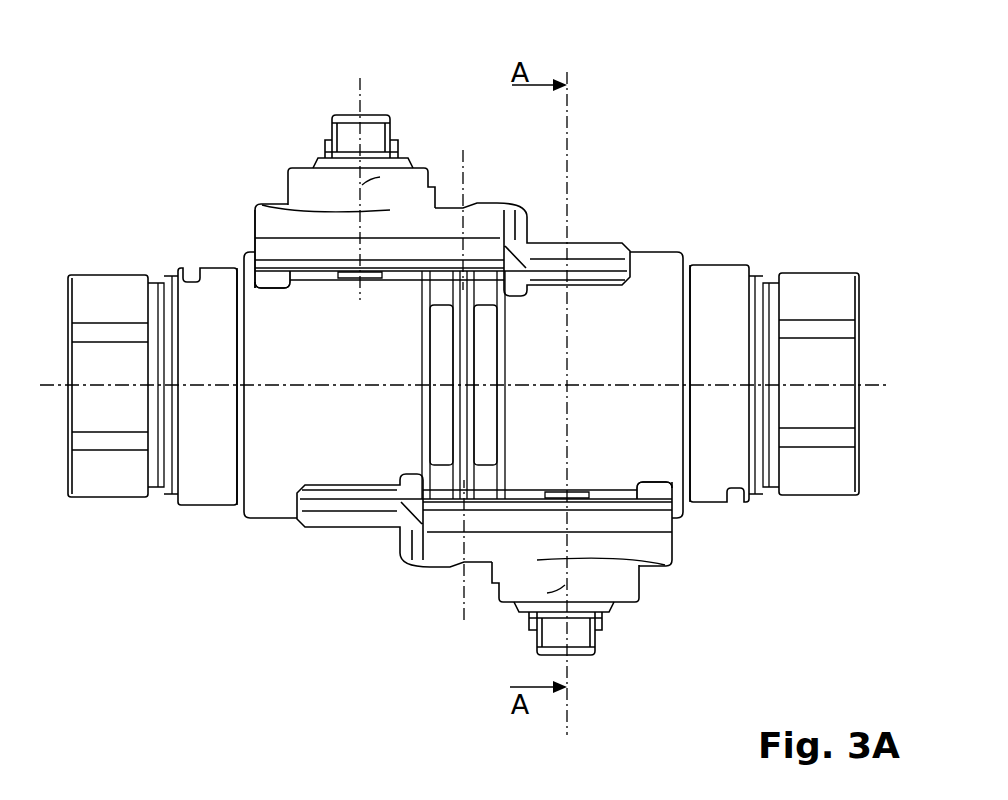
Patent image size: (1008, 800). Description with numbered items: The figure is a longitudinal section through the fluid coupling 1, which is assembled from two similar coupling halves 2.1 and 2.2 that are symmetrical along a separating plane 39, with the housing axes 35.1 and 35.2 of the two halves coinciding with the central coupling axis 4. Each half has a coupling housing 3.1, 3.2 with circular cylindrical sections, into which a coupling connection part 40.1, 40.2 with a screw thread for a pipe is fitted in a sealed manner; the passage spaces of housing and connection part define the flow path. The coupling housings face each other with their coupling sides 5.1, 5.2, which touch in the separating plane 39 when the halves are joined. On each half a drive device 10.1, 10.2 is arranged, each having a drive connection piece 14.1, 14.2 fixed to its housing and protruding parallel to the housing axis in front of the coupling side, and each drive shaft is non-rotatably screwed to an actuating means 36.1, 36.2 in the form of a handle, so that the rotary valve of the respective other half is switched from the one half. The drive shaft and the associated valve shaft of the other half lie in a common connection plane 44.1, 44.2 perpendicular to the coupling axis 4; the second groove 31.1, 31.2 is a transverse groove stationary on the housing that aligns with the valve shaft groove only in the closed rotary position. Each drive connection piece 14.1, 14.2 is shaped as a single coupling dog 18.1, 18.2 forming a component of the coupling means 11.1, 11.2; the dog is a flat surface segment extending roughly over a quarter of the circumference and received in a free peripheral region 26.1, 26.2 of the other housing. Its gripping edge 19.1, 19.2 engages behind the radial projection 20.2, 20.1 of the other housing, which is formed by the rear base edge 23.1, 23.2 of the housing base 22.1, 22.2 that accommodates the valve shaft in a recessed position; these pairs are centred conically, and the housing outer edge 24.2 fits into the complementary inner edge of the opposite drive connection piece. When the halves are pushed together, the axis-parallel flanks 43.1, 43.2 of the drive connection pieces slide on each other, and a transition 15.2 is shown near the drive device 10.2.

The fluid coupling 1 is at (390, 86).
The coupling half 2.1 is at (276, 426).
The coupling half 2.2 is at (682, 344).
The coupling housing 3.1 is at (287, 520).
The coupling housing 3.2 is at (686, 255).
The coupling axis 4 is at (203, 387).
The coupling side 5.1 is at (503, 205).
The coupling side 5.2 is at (450, 485).
The drive device 10.1 is at (520, 641).
The drive device 10.2 is at (297, 145).
The coupling means 11.1 is at (603, 540).
The coupling means 11.2 is at (338, 260).
The drive connection piece 14.1 is at (615, 493).
The drive connection piece 14.2 is at (312, 277).
The transition radius 15.2 is at (382, 176).
The coupling dog 18.1 is at (545, 515).
The coupling dog 18.2 is at (477, 290).
The gripping edge 19.1 is at (657, 497).
The gripping edge 19.2 is at (260, 265).
The radial projection 20.1 is at (191, 232).
The radial projection 20.2 is at (705, 587).
The housing base 22.1 is at (273, 268).
The housing base 22.2 is at (495, 385).
The rear base edge 23.1 is at (268, 278).
The rear base edge 23.2 is at (652, 508).
The housing outer edge 24.2 is at (518, 322).
The free peripheral region 26.1 is at (333, 444).
The free peripheral region 26.2 is at (598, 359).
The second groove 31.1 is at (368, 278).
The second groove 31.2 is at (578, 502).
The housing axis 35.1 is at (317, 387).
The housing axis 35.2 is at (663, 387).
The actuating means 36.1 is at (578, 638).
The actuating means 36.2 is at (340, 133).
The separating plane 39 is at (465, 165).
The coupling connection part 40.1 is at (110, 275).
The coupling connection part 40.2 is at (808, 275).
The axis-parallel flank 43.1 is at (490, 512).
The axis-parallel flank 43.2 is at (437, 262).
The connection plane 44.1 is at (360, 92).
The connection plane 44.2 is at (567, 725).